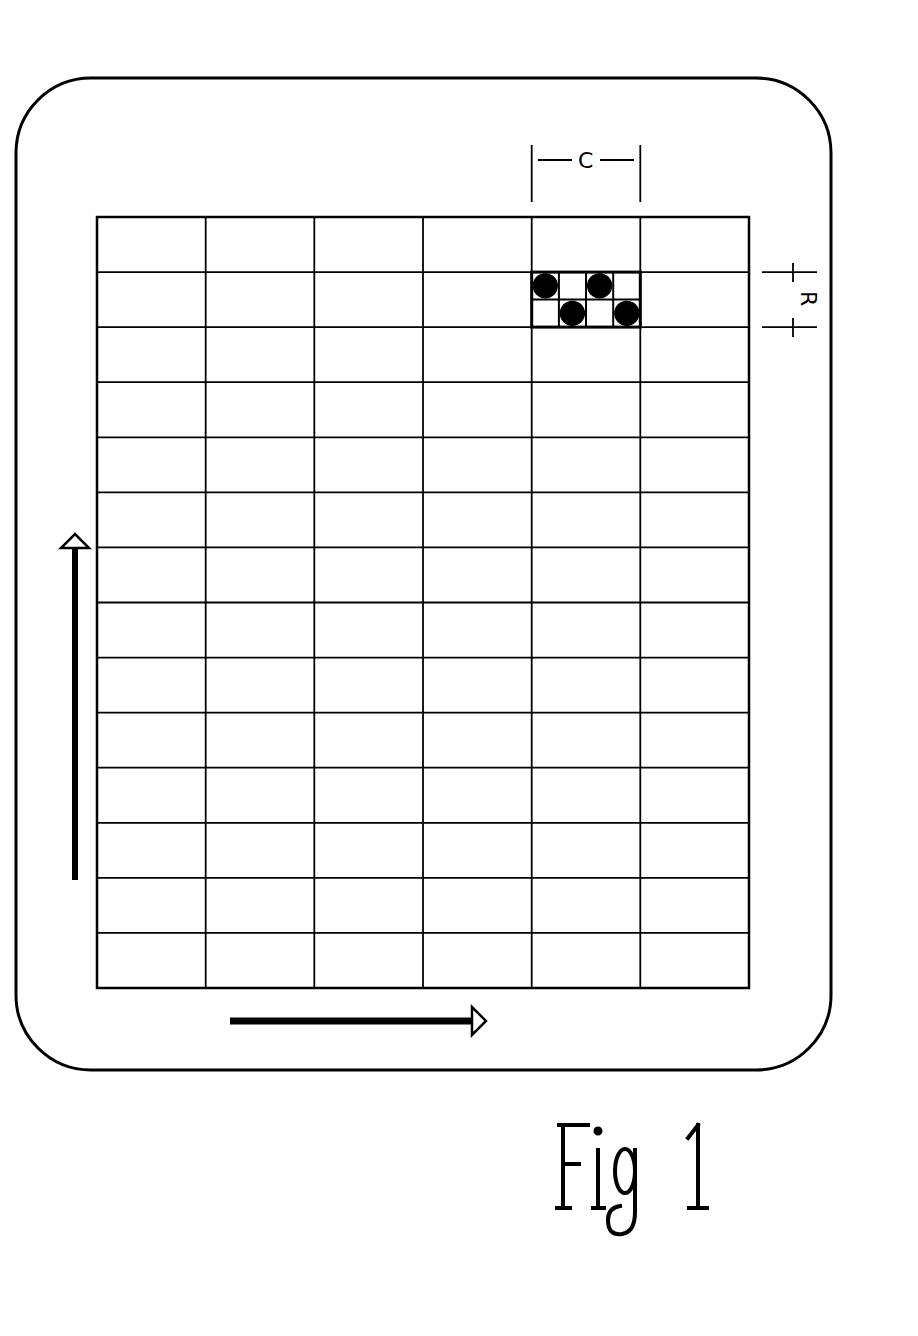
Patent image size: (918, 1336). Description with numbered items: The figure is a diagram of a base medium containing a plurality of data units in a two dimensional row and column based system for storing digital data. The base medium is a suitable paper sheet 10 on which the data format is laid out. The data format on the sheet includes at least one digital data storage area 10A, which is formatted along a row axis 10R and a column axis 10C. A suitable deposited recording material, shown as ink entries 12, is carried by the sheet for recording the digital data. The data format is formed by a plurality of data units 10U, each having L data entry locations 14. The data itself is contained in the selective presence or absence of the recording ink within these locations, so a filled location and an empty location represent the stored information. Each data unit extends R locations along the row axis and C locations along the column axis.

The paper sheet 10 is at (80, 30).
The digital data storage area 10A is at (93, 237).
The data unit 10U is at (545, 300).
The ink entries 12 is at (544, 272).
The data entry location 14 is at (544, 318).
The row axis 10R is at (70, 578).
The column axis 10C is at (298, 1026).